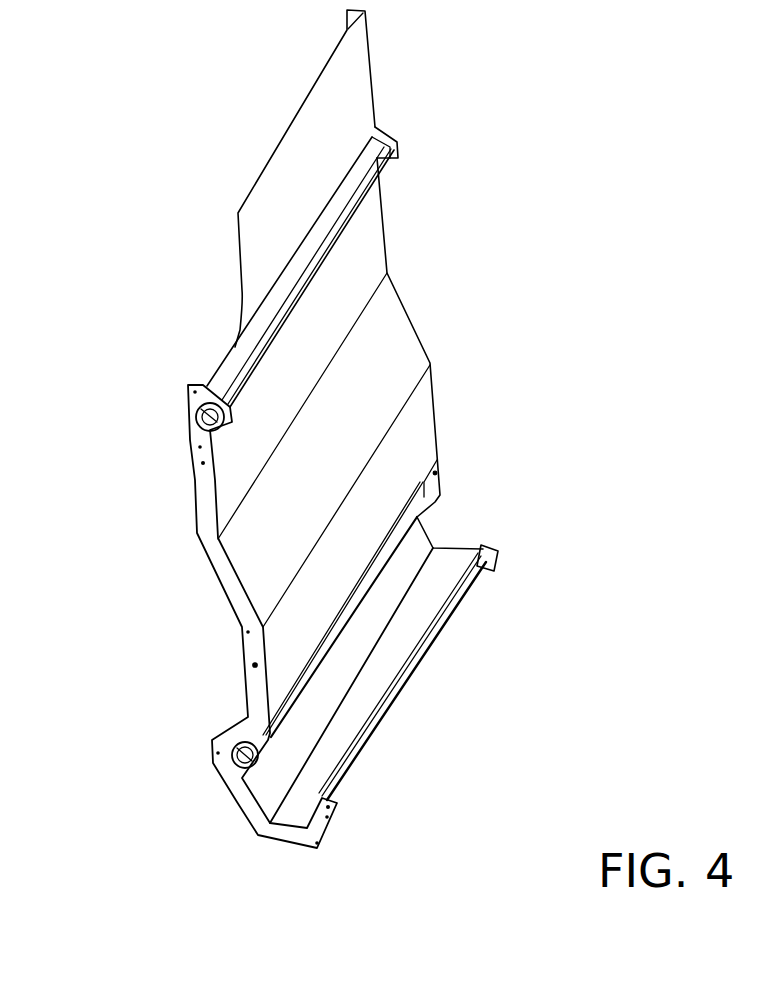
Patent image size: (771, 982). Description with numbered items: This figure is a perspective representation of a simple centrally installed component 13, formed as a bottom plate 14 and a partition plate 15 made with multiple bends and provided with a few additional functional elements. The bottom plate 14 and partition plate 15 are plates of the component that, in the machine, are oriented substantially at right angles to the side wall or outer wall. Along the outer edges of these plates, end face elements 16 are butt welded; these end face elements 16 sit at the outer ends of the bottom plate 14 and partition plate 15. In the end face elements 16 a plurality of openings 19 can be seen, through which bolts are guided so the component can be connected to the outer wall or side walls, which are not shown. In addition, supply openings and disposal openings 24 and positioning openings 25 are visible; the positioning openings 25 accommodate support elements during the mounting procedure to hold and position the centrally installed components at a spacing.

The centrally installed component 13 is at (308, 444).
The bottom plate 14 is at (405, 660).
The partition plate 15 is at (367, 373).
The end face element 16 is at (308, 372).
The opening 19 is at (231, 631).
The supply and disposal opening 24 is at (249, 597).
The positioning opening 25 is at (213, 647).